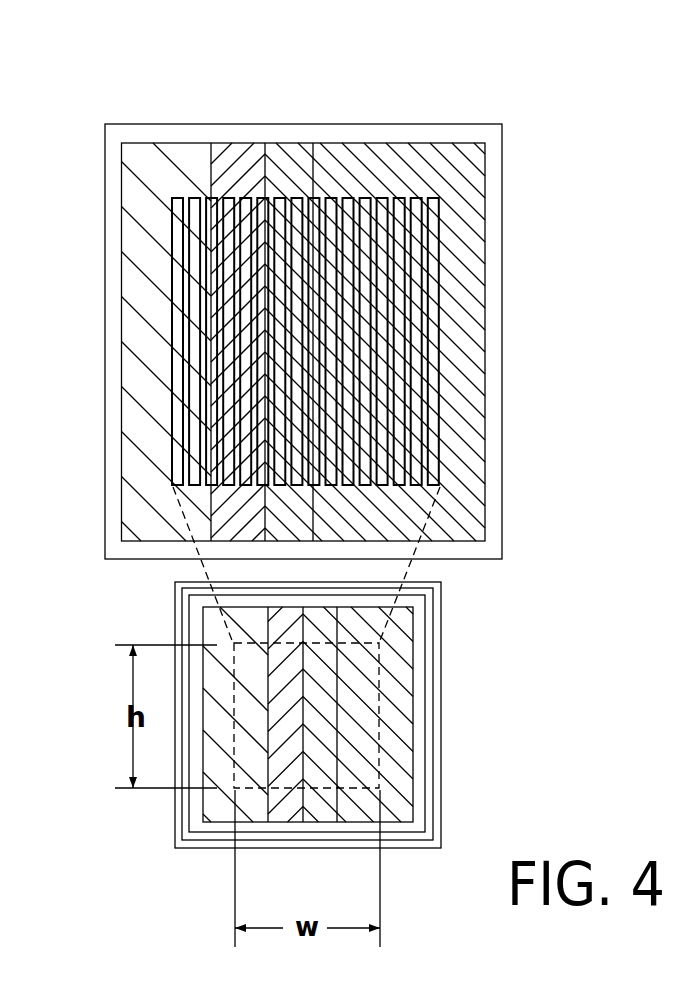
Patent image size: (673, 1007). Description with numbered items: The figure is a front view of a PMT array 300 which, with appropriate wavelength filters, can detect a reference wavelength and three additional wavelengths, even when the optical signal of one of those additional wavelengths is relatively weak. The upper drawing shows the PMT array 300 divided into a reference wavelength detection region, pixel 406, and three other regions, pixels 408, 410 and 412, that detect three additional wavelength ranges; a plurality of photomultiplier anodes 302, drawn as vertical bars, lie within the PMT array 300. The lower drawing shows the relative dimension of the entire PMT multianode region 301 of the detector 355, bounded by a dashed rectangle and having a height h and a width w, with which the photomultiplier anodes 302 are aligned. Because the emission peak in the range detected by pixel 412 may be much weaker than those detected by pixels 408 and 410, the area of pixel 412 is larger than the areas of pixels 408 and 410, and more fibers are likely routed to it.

The PMT array 300 is at (512, 70).
The PMT multianode region 301 is at (344, 739).
The photomultiplier anodes 302 is at (432, 198).
The detector 355 is at (186, 870).
The reference wavelength detection pixel 406 is at (159, 158).
The first additional wavelength pixel 408 is at (231, 160).
The second additional wavelength pixel 410 is at (291, 160).
The third additional wavelength pixel 412 is at (352, 160).